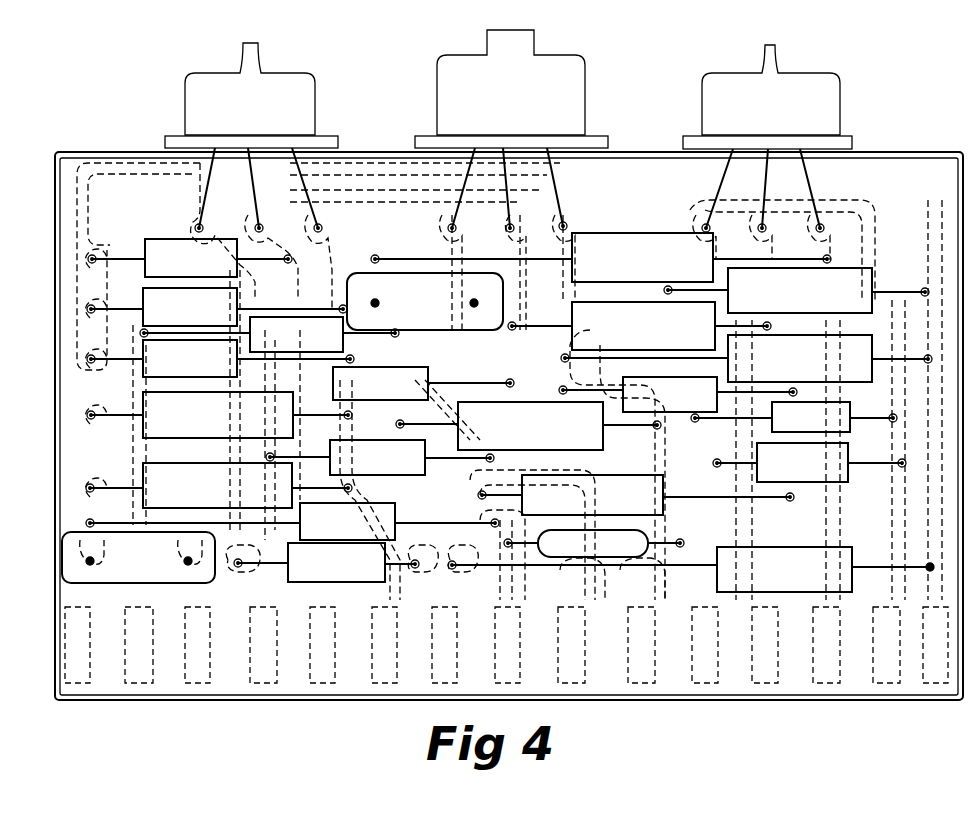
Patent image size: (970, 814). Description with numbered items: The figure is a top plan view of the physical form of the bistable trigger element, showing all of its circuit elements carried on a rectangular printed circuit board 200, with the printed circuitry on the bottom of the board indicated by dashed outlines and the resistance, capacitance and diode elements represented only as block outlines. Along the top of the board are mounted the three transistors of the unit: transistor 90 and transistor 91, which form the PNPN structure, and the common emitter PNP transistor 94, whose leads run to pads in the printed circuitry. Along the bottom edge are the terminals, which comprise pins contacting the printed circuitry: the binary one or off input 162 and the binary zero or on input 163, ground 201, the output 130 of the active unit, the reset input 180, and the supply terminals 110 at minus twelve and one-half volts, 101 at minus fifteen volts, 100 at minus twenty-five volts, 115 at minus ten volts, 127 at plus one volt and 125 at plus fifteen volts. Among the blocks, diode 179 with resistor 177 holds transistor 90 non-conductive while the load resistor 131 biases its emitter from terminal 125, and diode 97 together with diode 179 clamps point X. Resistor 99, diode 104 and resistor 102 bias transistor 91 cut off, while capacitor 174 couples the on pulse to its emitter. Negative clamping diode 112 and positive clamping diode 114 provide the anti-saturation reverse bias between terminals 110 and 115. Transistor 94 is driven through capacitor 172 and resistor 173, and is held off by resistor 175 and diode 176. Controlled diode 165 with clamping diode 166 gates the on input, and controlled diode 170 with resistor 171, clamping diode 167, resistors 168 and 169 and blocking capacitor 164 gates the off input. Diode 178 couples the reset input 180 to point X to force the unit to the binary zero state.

The transistor 90 is at (232, 116).
The transistor 91 is at (490, 112).
The common emitter PNP transistor 94 is at (750, 116).
The diode 97 is at (322, 572).
The resistor 99 is at (618, 334).
The terminal 100 is at (705, 688).
The terminal 101 is at (648, 690).
The resistor 102 is at (484, 434).
The diode 104 is at (364, 394).
The terminal 110 is at (575, 690).
The negative clamping diode 112 is at (405, 476).
The positive clamping diode 114 is at (643, 404).
The terminal 115 is at (765, 688).
The terminal 125 is at (886, 688).
The terminal 127 is at (826, 688).
The output terminal 130 is at (440, 690).
The load resistor 131 is at (774, 579).
The binary 1 input 162 is at (198, 684).
The binary 0 input 163 is at (140, 686).
The blocking capacitor 164 is at (75, 553).
The controlled diode 165 is at (281, 344).
The negative clamping diode 166 is at (174, 317).
The negative clamping diode 167 is at (174, 368).
The resistor 168 is at (174, 425).
The resistor 169 is at (174, 496).
The controlled diode 170 is at (300, 534).
The resistor 171 is at (548, 503).
The capacitor 172 is at (550, 553).
The resistor 173 is at (621, 266).
The capacitor 174 is at (404, 309).
The resistor 175 is at (771, 296).
The diode 176 is at (810, 474).
The resistor 177 is at (779, 366).
The diode 178 is at (836, 428).
The diode 179 is at (175, 269).
The reset pulse input 180 is at (520, 665).
The printed circuit board 200 is at (300, 698).
The ground connection 201 is at (263, 684).